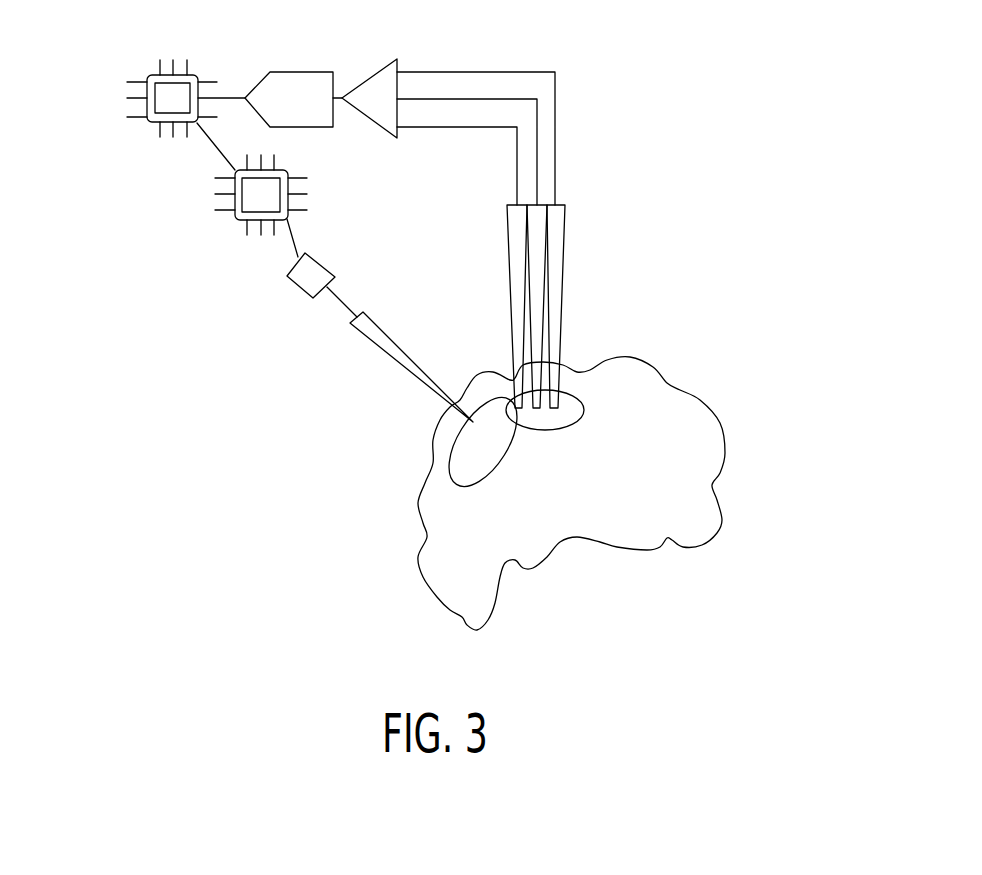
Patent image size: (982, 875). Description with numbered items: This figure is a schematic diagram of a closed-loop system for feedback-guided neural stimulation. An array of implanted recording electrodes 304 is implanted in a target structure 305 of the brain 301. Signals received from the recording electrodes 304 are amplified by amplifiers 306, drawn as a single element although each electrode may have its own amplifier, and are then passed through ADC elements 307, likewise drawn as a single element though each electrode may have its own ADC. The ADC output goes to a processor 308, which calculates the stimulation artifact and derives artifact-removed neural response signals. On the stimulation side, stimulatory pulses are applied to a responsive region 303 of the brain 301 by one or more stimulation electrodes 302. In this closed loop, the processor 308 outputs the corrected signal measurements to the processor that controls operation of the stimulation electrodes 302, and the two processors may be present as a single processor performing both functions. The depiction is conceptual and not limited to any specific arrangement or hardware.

The brain 301 is at (693, 438).
The stimulation electrode 302 is at (377, 333).
The responsive region of the brain 303 is at (472, 453).
The array of implanted recording electrodes 304 is at (518, 220).
The target structure 305 is at (568, 410).
The amplifiers 306 is at (383, 92).
The ADC elements 307 is at (297, 92).
The processor 308 is at (163, 93).